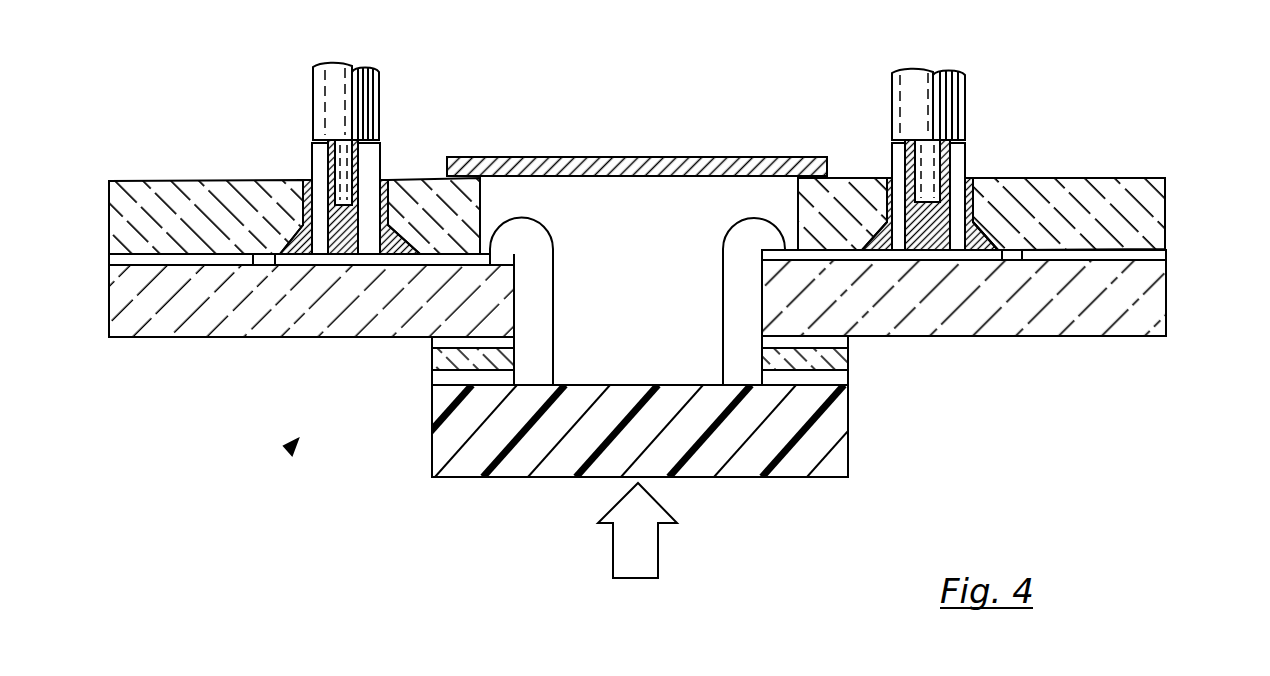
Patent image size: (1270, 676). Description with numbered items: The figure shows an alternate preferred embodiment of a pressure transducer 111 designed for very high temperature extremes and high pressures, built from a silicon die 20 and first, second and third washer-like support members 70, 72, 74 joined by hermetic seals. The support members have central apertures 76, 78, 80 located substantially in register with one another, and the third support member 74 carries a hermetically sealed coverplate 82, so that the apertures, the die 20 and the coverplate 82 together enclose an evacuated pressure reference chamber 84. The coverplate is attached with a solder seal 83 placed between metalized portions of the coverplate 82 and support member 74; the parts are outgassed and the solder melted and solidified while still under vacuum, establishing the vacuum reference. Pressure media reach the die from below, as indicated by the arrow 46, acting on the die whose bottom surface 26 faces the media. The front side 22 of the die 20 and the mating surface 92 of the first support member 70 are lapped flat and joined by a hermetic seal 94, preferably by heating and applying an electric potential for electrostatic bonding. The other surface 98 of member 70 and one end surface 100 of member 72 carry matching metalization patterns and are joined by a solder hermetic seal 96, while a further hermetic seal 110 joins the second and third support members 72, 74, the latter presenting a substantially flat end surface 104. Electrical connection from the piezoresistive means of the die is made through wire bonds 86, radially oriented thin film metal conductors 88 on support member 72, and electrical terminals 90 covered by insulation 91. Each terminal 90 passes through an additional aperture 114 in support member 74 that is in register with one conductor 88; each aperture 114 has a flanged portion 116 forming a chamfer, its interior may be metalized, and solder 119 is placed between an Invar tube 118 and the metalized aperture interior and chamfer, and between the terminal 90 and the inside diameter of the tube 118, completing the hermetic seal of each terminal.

The silicon die 20 is at (803, 466).
The front side of die 22 is at (683, 385).
The bottom surface of base plate 26 is at (478, 478).
The direction of force / flow arrow 46 is at (637, 530).
The first washer-like support member 70 is at (445, 360).
The second washer-like support member 72 is at (172, 325).
The third washer-like support member 74 is at (165, 195).
The central aperture of first support member 76 is at (516, 360).
The central aperture of second support member 78 is at (516, 285).
The central aperture of third support member 80 is at (798, 200).
The coverplate 82 is at (633, 157).
The solder seal 83 is at (462, 160).
The evacuated pressure reference chamber 84 is at (617, 286).
The wire bonds 86 is at (540, 220).
The thin film metal conductors 88 is at (523, 255).
The electrical terminal 90 is at (345, 176).
The insulation 91 is at (365, 66).
The mating surface of first support member 92 is at (455, 372).
The hermetic seal 94 is at (848, 378).
The hermetic seal 96 is at (848, 342).
The other surface of first support member 98 is at (789, 345).
The end surface of second support member 100 is at (323, 337).
The end surface of third support member 104 is at (1152, 178).
The hermetic seal 110 is at (1155, 254).
The pressure transducer 111 is at (290, 448).
The additional aperture 114 is at (1000, 194).
The flanged portion 116 is at (310, 240).
The Invar tube 118 is at (313, 158).
The solder 119 is at (365, 240).